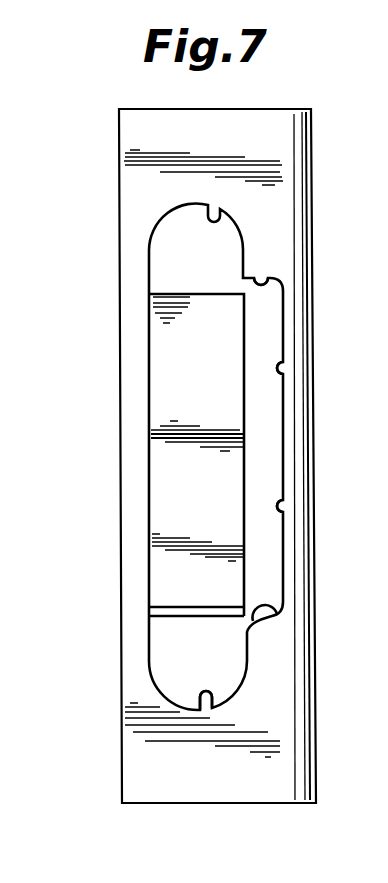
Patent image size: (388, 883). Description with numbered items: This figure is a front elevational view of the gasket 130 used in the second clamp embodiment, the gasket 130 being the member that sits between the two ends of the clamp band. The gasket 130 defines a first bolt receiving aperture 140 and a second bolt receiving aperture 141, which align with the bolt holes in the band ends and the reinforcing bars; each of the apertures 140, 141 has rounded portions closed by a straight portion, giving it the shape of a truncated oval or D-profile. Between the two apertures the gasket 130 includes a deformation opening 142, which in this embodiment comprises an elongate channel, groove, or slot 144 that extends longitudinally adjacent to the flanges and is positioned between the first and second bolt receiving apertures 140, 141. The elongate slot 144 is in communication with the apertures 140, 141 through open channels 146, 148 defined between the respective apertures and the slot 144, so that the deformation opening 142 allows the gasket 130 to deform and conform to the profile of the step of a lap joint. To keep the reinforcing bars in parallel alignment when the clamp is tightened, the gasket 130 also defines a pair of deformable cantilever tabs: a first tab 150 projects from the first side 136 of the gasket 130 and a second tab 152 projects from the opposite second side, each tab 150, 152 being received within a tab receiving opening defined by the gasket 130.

The gasket 130 is at (102, 193).
The first side 136 is at (282, 787).
The first bolt receiving aperture 140 is at (206, 711).
The second bolt receiving aperture 141 is at (218, 219).
The deformation opening 142 is at (270, 373).
The elongate slot 144 is at (270, 509).
The open channel 146 is at (263, 285).
The open channel 148 is at (265, 613).
The first tab 150 is at (177, 586).
The second tab 152 is at (170, 339).